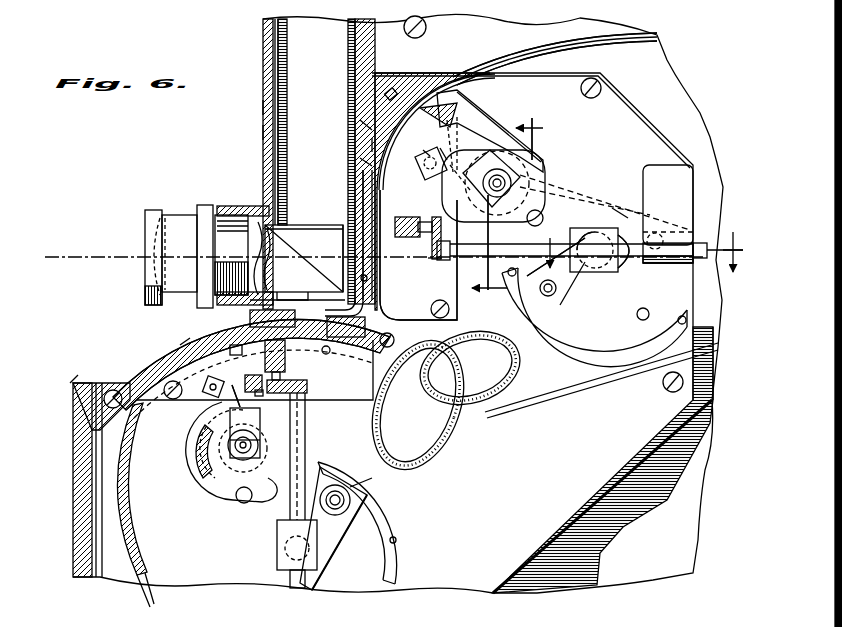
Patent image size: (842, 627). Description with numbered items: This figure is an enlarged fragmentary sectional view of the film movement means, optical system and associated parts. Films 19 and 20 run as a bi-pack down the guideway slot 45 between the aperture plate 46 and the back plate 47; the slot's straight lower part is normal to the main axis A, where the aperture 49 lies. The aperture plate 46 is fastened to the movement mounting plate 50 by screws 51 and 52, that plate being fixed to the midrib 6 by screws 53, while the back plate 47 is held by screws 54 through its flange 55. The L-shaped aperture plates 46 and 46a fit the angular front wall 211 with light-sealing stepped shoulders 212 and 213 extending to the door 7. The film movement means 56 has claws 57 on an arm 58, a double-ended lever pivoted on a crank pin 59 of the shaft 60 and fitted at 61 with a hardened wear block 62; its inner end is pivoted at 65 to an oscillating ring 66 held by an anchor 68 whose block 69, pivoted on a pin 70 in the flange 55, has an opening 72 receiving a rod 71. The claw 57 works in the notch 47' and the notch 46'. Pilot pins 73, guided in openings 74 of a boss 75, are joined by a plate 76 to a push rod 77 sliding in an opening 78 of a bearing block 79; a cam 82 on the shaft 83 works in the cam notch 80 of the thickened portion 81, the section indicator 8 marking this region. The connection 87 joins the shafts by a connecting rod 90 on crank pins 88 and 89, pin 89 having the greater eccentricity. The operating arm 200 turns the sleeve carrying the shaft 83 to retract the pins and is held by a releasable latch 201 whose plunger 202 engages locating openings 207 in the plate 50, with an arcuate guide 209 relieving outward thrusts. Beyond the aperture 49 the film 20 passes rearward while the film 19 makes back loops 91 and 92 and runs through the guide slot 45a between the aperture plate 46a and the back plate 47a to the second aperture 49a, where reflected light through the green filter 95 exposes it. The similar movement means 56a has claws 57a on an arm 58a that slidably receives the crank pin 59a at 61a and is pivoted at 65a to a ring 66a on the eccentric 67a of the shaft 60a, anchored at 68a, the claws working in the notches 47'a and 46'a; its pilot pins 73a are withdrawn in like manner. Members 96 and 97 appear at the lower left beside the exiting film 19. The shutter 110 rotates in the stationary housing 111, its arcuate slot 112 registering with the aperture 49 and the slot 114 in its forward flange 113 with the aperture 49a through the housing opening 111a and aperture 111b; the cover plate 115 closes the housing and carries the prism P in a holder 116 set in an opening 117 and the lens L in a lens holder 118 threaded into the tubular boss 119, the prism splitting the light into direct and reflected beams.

The shutter 110 is at (344, 38).
The housing 111 is at (357, 49).
The slot 114 is at (273, 78).
The stepped shoulder 212 is at (352, 76).
The axially extending flange 113 is at (268, 108).
The cover plate 115 is at (262, 133).
The aperture plate 46 is at (393, 191).
The notch 46' is at (334, 122).
The back plate 47 is at (335, 142).
The notch 47' is at (334, 158).
The screw 51 is at (393, 90).
The film engaging claws 57 is at (460, 100).
The arm 58 is at (453, 170).
The slot 61 is at (492, 153).
The oscillating ring 66 is at (480, 160).
The door 7 is at (523, 213).
The film movement means 56 is at (565, 151).
The hardened wear taking block 62 is at (545, 166).
The crank pin 59 is at (526, 172).
The crank pin 88 is at (522, 190).
The pivotal connection 65 is at (543, 215).
The connection 87 is at (625, 212).
The connecting rod 90 is at (641, 200).
The crank pin 89 is at (657, 233).
The section line 8- 8 is at (647, 246).
The shaft 60 is at (472, 261).
The push rod 77 is at (515, 253).
The flange 55 is at (447, 298).
The screws 54 is at (449, 311).
The releasable latch 201 is at (534, 300).
The operating arm 200 is at (557, 322).
The arcuate guide 209 is at (588, 350).
The locating openings 207 is at (640, 319).
The cam notch 80 is at (612, 280).
The thickened portion 81 is at (596, 290).
The cam 82 is at (612, 272).
The shaft 83 is at (619, 270).
The bearing block 79 is at (659, 264).
The opening 78 is at (651, 268).
The pilot pins 73 is at (414, 238).
The openings 74 is at (430, 248).
The aperture 49 is at (368, 278).
The plate 76 is at (432, 259).
The opening 111a is at (370, 288).
The screw 52 is at (396, 338).
The back loop 91 is at (515, 388).
The back loop 92 is at (452, 462).
The film 20 is at (547, 408).
The film 19 is at (659, 43).
The movement mounting plate 50 is at (630, 117).
The screws 53 is at (667, 387).
The midrib 6 is at (668, 523).
The lens L is at (152, 242).
The main axis A is at (80, 252).
The lens holder 118 is at (170, 208).
The tubular boss 119 is at (222, 212).
The opening 117 is at (250, 210).
The holder 116 is at (306, 226).
The prism P is at (312, 232).
The arcuate slot 112 is at (350, 242).
The aperture 111b is at (345, 285).
The stepped shoulder 213 is at (64, 368).
The notch 47'a is at (211, 384).
The back plate 47a is at (110, 376).
The notch 46'a is at (163, 337).
The aperture plate 46a is at (186, 358).
The guide slot 45a is at (165, 358).
The claws 57a is at (236, 352).
The anchor 68a is at (207, 386).
The opening 72 is at (210, 392).
The boss 75 is at (416, 220).
The rod 71 is at (218, 407).
The eccentric 67a is at (207, 445).
The film movement means 56a is at (190, 463).
The oscillating ring 66a is at (207, 468).
The shaft 60a is at (221, 480).
The pivotal connection 65a is at (237, 498).
The hub 61a is at (252, 490).
The arm 58a is at (305, 421).
The crank pin 59a is at (305, 438).
The retractable plunger 202 is at (352, 500).
The pilot pins 73a is at (285, 350).
The green filter 95 is at (290, 369).
The second aperture 49a is at (330, 353).
The front wall 211 is at (73, 450).
The strip 97 is at (96, 530).
The arm 96 is at (122, 532).
The guideway slot 45 is at (412, 165).
The anchor 68 is at (422, 181).
The block 69 is at (431, 153).
The pin 70 is at (447, 158).